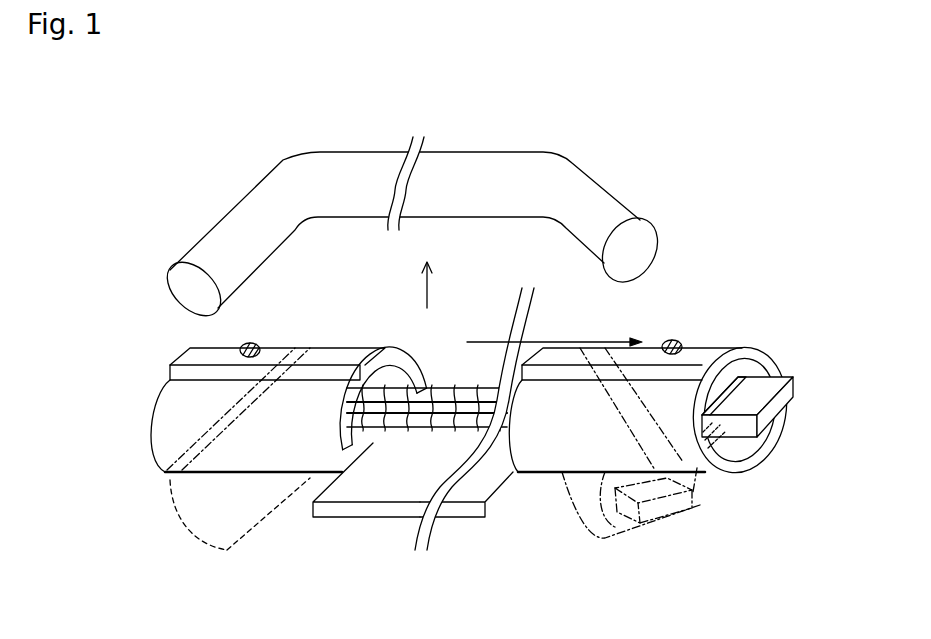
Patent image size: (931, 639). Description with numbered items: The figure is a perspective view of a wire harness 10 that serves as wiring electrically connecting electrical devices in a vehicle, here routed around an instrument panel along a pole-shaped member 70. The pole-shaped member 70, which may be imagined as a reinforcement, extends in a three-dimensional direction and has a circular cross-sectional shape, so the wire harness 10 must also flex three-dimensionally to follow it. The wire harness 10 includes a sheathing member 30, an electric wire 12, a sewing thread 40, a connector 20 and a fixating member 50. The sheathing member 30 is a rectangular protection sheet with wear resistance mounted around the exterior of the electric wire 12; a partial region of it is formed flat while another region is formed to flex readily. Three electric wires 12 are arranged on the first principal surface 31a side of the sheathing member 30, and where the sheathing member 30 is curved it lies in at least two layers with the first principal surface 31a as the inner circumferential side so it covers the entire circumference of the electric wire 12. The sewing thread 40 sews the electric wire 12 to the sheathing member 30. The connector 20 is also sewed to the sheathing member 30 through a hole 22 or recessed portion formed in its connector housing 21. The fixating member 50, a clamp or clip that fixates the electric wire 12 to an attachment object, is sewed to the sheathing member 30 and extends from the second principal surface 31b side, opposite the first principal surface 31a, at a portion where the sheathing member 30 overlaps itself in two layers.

The wire harness 10 is at (152, 505).
The electric wire 12 is at (447, 387).
The connector 20 is at (770, 408).
The connector housing 21 is at (775, 382).
The hole 22 is at (728, 465).
The sheathing member 30 is at (413, 510).
The first principal surface 31a is at (355, 490).
The second principal surface 31b is at (393, 518).
The sewing thread 40 is at (432, 405).
The fixating member 50 is at (253, 342).
The pole-shaped member 70 is at (522, 140).